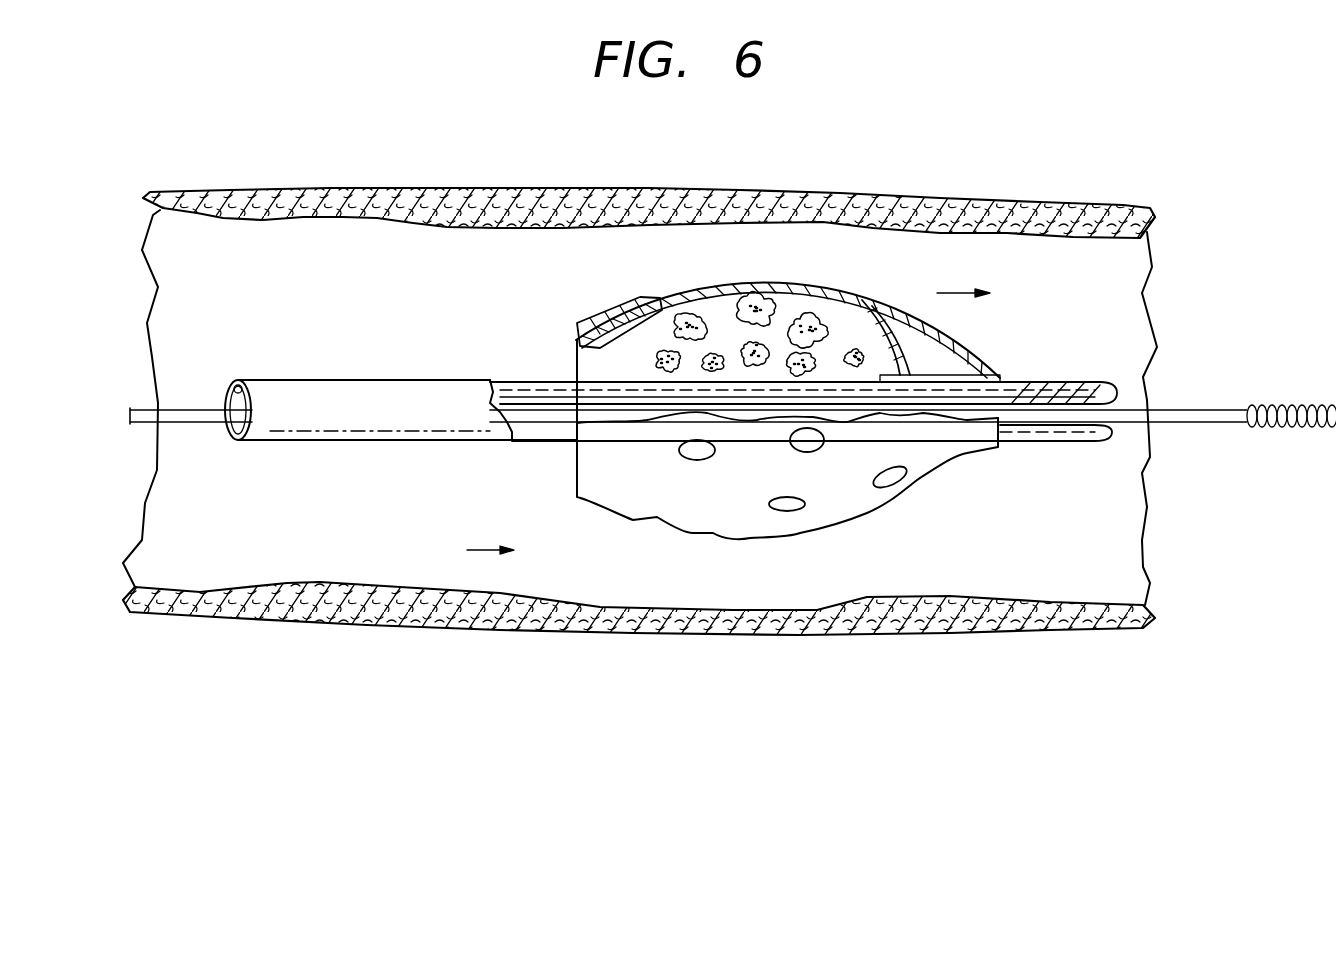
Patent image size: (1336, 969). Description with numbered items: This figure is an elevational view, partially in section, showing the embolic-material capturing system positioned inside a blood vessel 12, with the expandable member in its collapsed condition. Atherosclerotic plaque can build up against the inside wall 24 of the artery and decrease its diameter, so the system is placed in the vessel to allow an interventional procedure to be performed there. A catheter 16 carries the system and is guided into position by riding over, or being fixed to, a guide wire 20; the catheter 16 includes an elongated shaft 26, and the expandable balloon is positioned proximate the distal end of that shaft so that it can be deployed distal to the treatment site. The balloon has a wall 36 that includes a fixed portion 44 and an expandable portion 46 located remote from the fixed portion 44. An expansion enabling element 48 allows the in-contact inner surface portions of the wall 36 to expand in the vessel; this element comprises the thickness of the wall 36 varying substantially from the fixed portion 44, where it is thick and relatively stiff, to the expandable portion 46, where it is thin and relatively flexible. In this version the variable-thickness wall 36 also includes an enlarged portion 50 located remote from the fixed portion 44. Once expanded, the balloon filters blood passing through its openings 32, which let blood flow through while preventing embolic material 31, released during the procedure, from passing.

The blood vessel 12 is at (433, 202).
The inside wall 24 is at (213, 200).
The catheter 16 is at (272, 413).
The guide wire 20 is at (1197, 427).
The elongated shaft 26 is at (375, 412).
The embolic material 31 is at (742, 283).
The openings 32 is at (790, 510).
The wall 36 is at (920, 450).
The fixed portion 44 is at (957, 360).
The expandable portion 46 is at (672, 300).
The expansion enabling element 48 is at (797, 288).
The enlarged portion 50 is at (607, 323).